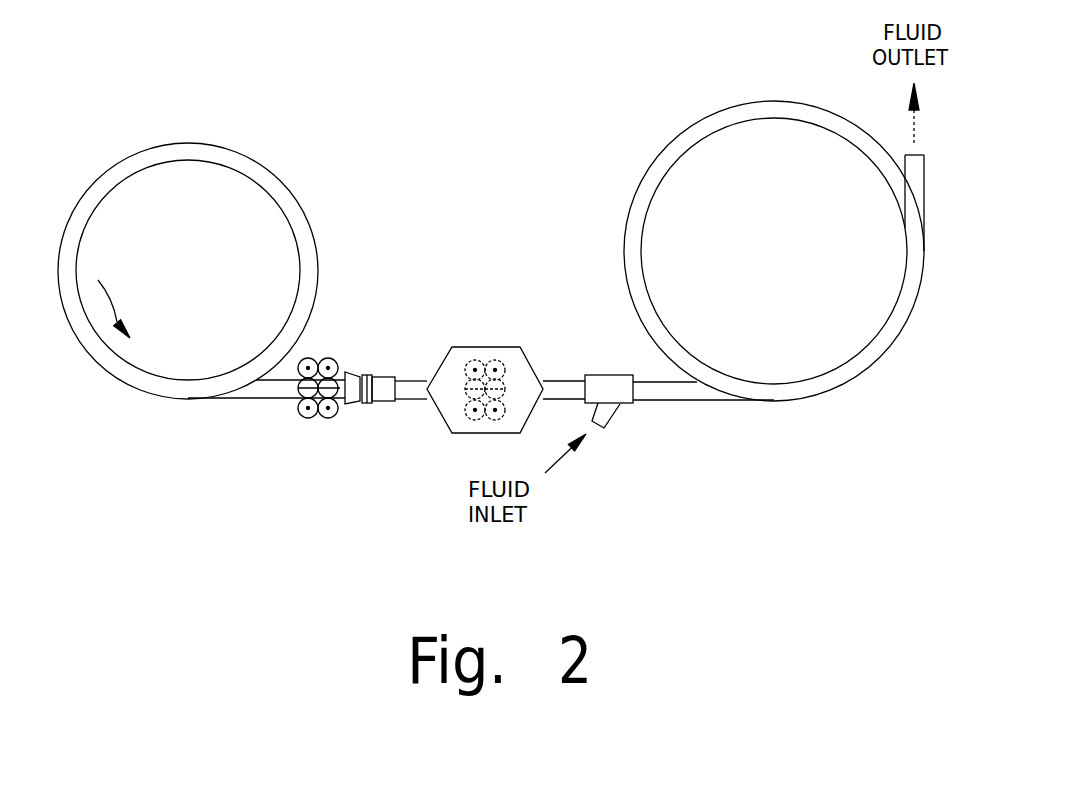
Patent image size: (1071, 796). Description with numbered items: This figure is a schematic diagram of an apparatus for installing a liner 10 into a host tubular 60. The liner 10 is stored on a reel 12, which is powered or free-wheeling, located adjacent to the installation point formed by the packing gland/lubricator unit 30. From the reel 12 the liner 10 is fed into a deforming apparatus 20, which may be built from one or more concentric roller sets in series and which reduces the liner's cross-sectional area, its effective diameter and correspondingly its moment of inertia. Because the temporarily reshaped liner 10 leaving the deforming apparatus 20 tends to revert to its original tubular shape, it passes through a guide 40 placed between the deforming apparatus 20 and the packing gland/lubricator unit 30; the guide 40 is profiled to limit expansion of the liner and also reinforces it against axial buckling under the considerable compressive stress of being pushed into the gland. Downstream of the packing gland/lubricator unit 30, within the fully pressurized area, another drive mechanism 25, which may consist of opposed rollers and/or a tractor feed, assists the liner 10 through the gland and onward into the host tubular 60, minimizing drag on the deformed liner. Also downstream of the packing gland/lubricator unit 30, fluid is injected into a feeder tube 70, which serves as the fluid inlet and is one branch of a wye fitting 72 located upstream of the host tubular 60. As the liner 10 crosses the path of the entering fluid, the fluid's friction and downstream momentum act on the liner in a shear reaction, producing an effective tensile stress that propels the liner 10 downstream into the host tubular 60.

The liner 10 is at (260, 392).
The reel 12 is at (240, 207).
The deforming apparatus 20 is at (293, 421).
The drive mechanism 25 is at (488, 343).
The packing gland/lubricator unit 30 is at (382, 406).
The guide 40 is at (361, 359).
The host tubular 60 is at (751, 155).
The feeder tube 70 is at (607, 424).
The wye fitting 72 is at (609, 370).